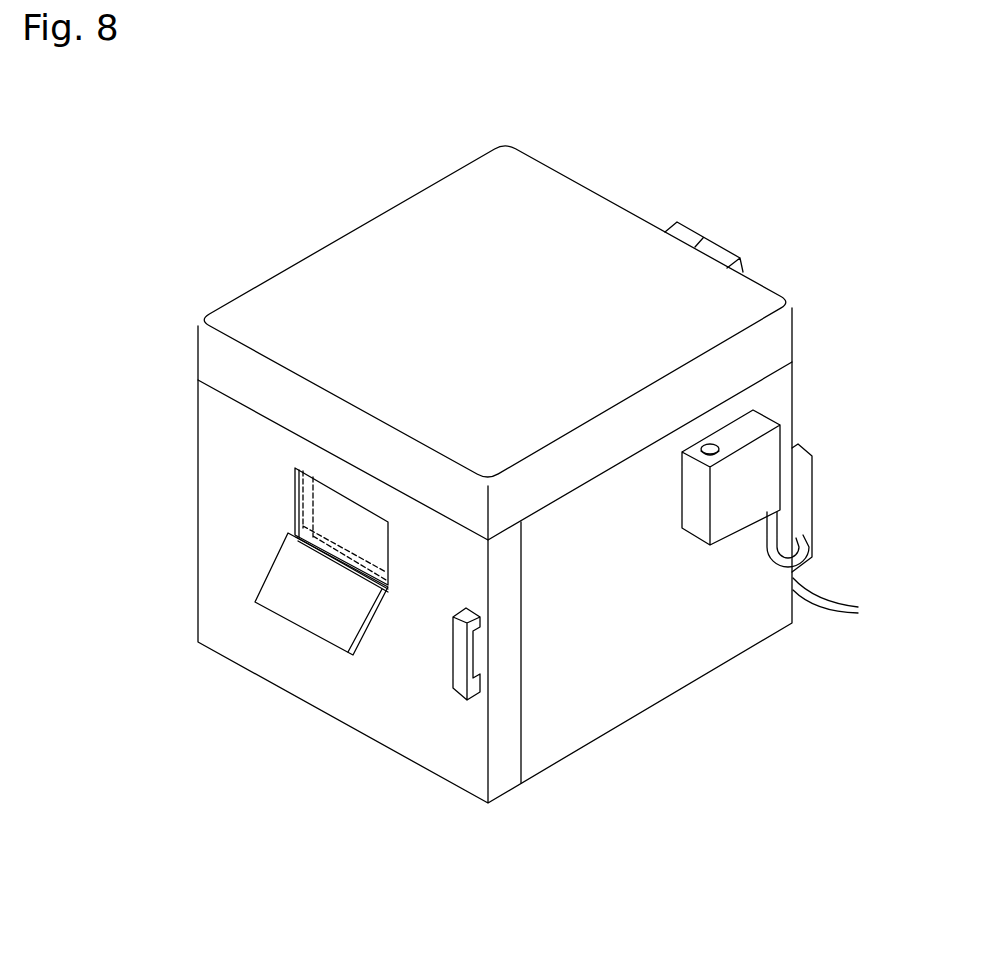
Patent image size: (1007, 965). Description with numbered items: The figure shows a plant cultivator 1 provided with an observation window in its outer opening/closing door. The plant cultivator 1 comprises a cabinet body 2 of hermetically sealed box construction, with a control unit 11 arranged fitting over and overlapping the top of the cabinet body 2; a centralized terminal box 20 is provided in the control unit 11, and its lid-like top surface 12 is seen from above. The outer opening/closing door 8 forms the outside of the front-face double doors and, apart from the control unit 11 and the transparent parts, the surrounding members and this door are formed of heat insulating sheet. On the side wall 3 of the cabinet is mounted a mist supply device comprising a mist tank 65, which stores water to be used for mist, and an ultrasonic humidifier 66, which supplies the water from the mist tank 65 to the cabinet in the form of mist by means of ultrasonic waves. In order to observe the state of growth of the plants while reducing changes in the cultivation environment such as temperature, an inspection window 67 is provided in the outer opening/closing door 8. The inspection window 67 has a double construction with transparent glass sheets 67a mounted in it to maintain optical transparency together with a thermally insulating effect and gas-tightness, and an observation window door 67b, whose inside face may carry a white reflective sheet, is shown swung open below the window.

The plant cultivator 1 is at (650, 178).
The cabinet body 2 is at (800, 672).
The side wall 3 is at (677, 674).
The outer opening/closing door 8 is at (390, 732).
The control unit 11 is at (237, 287).
The top surface 12 is at (342, 247).
The centralized terminal box 20 is at (722, 248).
The mist tank 65 is at (770, 446).
The ultrasonic humidifier 66 is at (803, 491).
The inspection window 67 is at (295, 512).
The transparent glass sheet 67a is at (343, 512).
The observation window door 67b is at (315, 622).